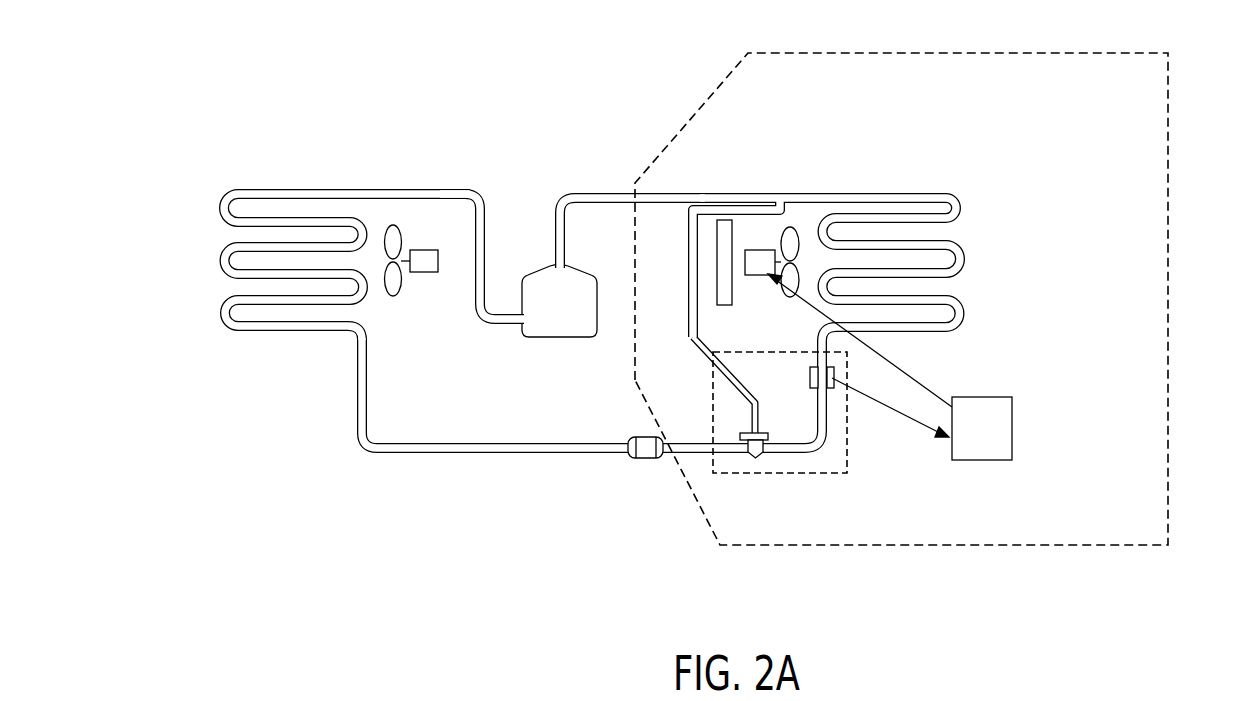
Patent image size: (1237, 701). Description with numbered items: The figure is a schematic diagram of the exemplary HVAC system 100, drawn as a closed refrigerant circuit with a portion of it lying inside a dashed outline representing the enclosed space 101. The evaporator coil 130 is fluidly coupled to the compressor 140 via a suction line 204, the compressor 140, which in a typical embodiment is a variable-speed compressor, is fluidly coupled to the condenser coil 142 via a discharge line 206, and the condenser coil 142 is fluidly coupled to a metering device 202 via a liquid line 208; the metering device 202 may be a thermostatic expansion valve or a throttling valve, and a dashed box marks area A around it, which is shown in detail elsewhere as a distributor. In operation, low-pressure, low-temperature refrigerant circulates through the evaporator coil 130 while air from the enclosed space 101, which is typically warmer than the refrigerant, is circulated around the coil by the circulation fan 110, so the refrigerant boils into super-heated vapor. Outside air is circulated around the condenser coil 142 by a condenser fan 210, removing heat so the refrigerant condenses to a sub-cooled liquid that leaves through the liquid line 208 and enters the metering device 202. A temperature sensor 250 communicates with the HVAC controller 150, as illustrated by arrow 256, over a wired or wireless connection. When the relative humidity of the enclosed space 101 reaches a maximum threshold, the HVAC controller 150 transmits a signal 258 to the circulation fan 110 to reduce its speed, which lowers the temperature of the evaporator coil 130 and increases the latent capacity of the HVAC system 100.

The HVAC system 100 is at (236, 134).
The enclosed space 101 is at (1170, 292).
The circulation fan 110 is at (760, 267).
The evaporator coil 130 is at (958, 331).
The compressor 140 is at (553, 338).
The condenser coil 142 is at (280, 332).
The HVAC controller 150 is at (1012, 430).
The metering device 202 is at (755, 459).
The suction line 204 is at (588, 205).
The discharge line 206 is at (485, 200).
The liquid line 208 is at (483, 455).
The condenser fan 210 is at (427, 270).
The temperature sensor 250 is at (812, 383).
The arrow 256 is at (895, 413).
The signal 258 is at (929, 388).
The area A is at (816, 485).